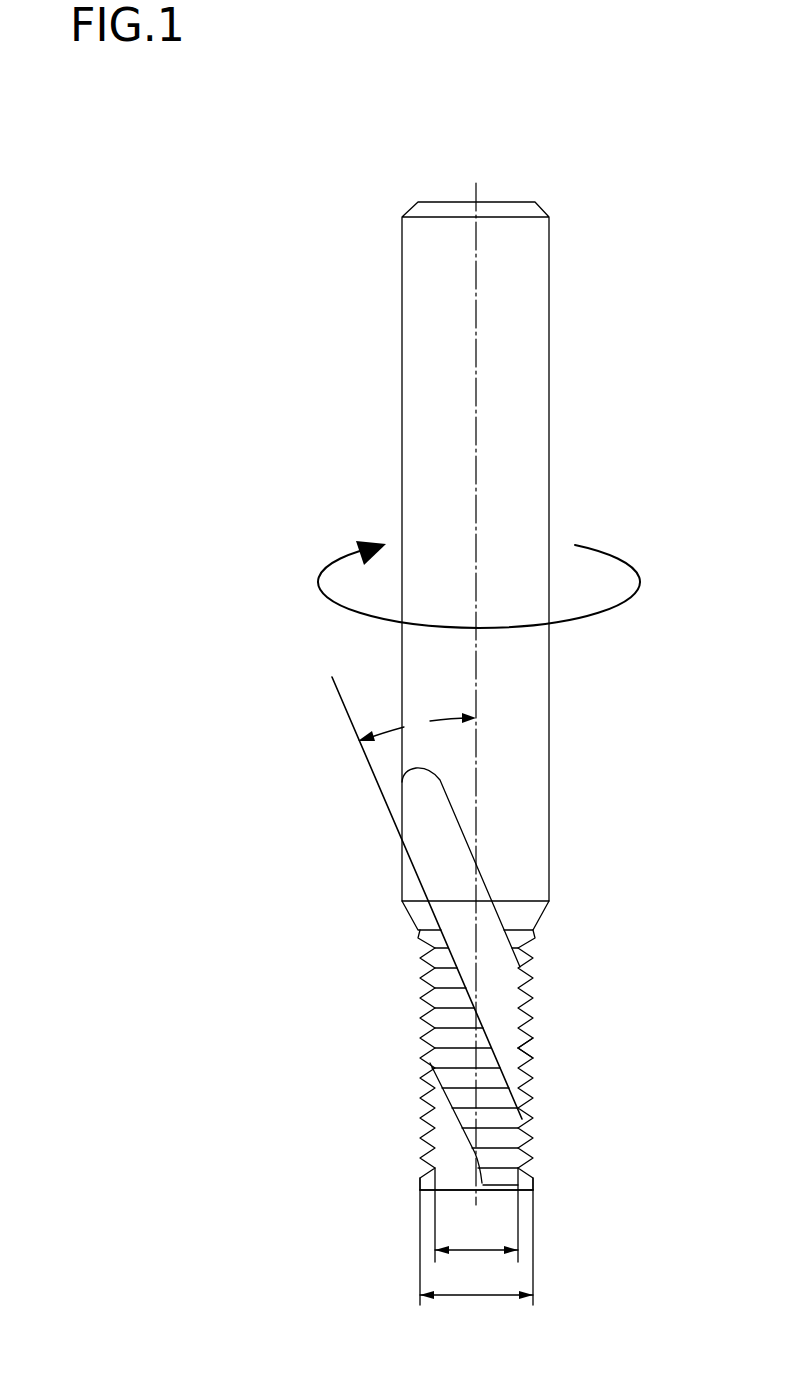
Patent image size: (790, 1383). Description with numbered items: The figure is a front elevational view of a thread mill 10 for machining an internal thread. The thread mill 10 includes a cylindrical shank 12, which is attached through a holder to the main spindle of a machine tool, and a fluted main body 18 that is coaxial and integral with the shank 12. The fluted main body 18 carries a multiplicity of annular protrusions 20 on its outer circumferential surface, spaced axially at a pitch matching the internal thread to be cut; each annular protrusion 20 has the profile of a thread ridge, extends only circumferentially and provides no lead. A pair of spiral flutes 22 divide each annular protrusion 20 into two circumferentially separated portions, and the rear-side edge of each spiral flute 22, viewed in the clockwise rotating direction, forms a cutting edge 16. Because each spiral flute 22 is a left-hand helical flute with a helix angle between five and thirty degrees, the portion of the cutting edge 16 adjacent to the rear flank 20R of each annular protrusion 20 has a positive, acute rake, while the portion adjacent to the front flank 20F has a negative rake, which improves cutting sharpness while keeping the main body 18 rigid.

The thread mill 10 is at (580, 211).
The shank 12 is at (523, 370).
The cutting edge 16 is at (527, 1000).
The fluted main body 18 is at (388, 1154).
The annular protrusion 20 is at (422, 982).
The rear flank 20R is at (528, 1038).
The front flank 20F is at (528, 1053).
The spiral flute 22 is at (492, 962).